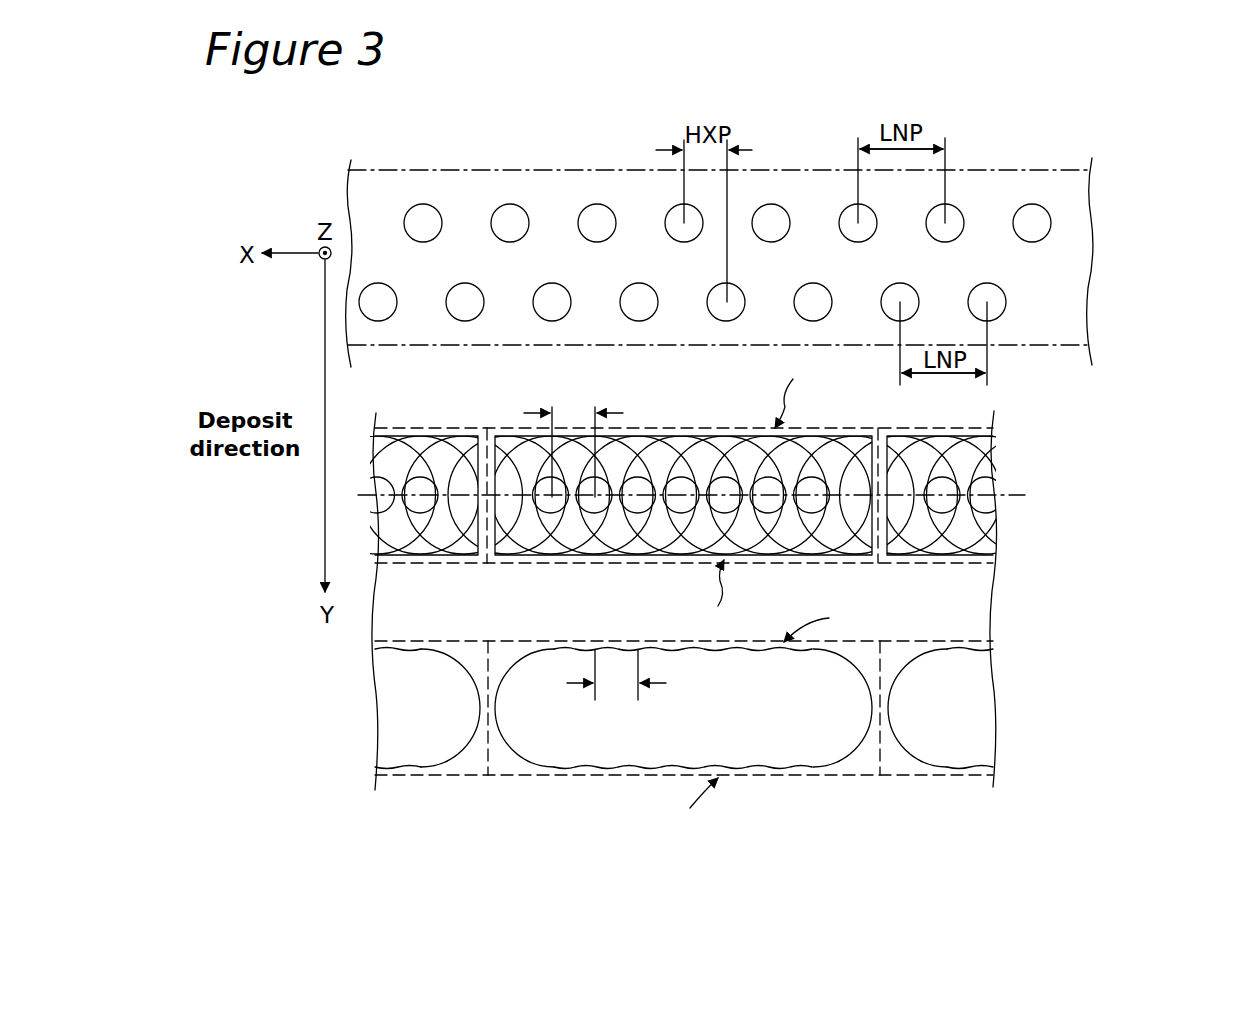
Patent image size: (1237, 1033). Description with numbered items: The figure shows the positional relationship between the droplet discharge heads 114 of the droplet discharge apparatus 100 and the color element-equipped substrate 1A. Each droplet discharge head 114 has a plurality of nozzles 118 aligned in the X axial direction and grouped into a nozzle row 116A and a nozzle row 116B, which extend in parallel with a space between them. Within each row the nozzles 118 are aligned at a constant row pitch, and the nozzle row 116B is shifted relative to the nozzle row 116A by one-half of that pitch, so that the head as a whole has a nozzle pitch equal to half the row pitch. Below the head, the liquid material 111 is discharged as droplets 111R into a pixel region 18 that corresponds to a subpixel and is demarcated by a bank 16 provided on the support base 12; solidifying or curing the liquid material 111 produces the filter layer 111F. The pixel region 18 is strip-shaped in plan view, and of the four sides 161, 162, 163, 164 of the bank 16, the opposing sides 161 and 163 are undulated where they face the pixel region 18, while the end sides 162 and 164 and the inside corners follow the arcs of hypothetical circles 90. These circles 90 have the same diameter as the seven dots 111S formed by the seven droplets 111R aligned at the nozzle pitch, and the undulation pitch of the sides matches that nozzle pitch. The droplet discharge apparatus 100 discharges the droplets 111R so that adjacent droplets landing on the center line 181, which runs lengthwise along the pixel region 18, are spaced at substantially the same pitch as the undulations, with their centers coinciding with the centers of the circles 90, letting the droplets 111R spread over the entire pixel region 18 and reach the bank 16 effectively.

The droplet discharge apparatus 100 is at (791, 220).
The droplet discharge head 114 is at (1092, 168).
The nozzle row 116A is at (1102, 222).
The nozzle row 116B is at (1102, 300).
The nozzle 118 is at (795, 216).
The color element-equipped substrate 1A is at (709, 592).
The center line 181 is at (1003, 497).
The liquid material 111 is at (709, 592).
The droplet 111R is at (485, 432).
The dot 111S is at (703, 495).
The circle 90 is at (508, 440).
The filter layer 111F is at (826, 553).
The bank 16 is at (896, 652).
The side 161 is at (703, 710).
The side 162 is at (478, 708).
The side 163 is at (384, 762).
The side 164 is at (497, 710).
The support base 12 is at (707, 710).
The pixel region 18 is at (436, 750).